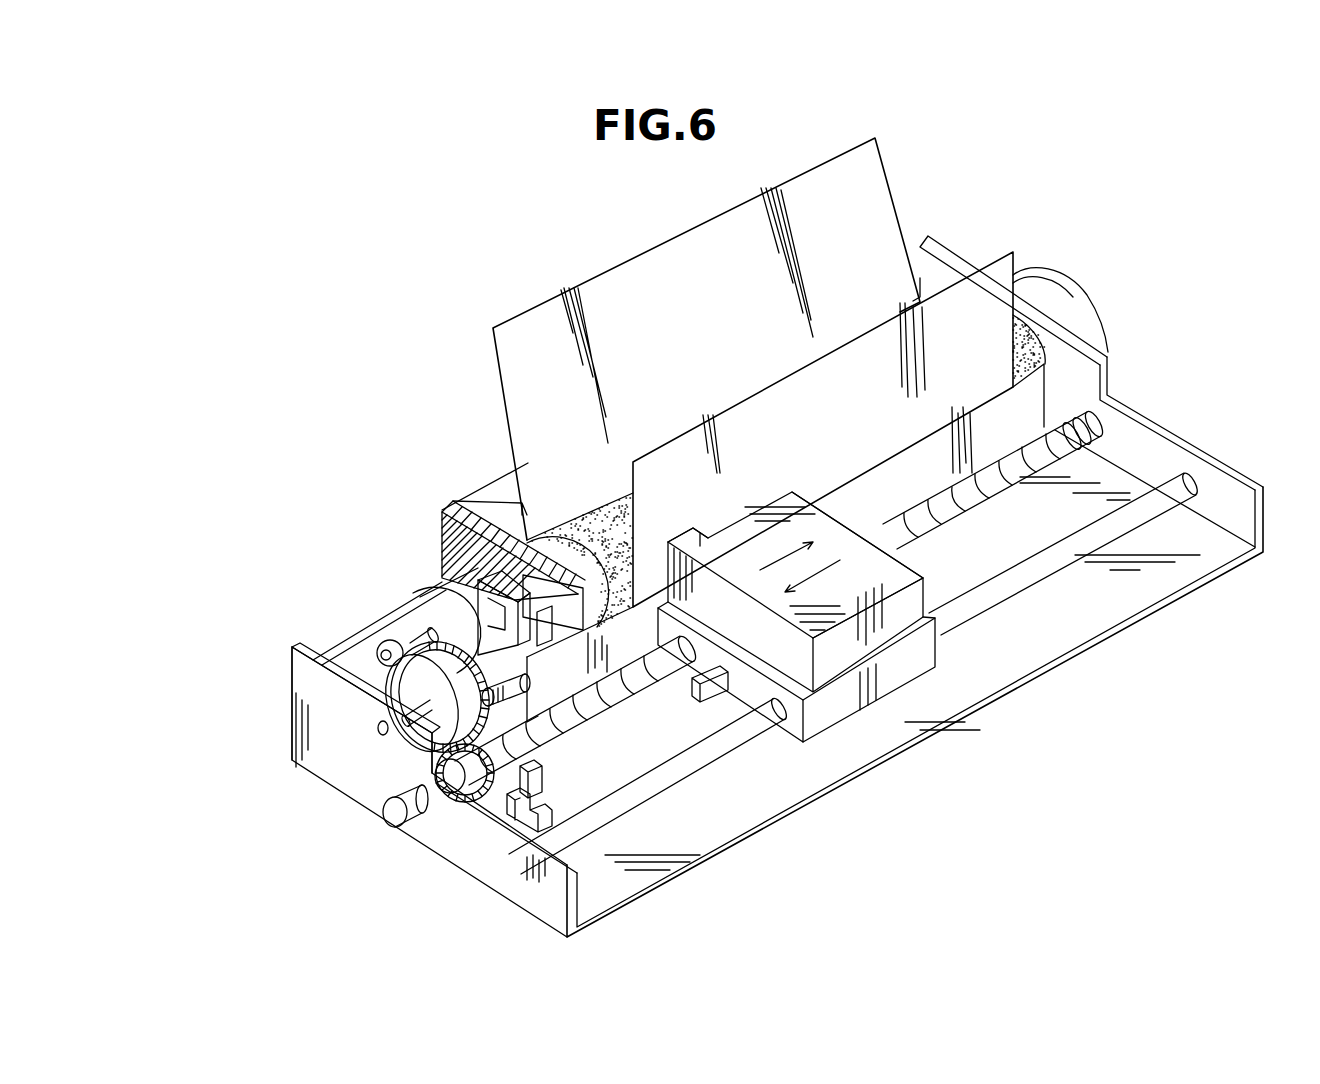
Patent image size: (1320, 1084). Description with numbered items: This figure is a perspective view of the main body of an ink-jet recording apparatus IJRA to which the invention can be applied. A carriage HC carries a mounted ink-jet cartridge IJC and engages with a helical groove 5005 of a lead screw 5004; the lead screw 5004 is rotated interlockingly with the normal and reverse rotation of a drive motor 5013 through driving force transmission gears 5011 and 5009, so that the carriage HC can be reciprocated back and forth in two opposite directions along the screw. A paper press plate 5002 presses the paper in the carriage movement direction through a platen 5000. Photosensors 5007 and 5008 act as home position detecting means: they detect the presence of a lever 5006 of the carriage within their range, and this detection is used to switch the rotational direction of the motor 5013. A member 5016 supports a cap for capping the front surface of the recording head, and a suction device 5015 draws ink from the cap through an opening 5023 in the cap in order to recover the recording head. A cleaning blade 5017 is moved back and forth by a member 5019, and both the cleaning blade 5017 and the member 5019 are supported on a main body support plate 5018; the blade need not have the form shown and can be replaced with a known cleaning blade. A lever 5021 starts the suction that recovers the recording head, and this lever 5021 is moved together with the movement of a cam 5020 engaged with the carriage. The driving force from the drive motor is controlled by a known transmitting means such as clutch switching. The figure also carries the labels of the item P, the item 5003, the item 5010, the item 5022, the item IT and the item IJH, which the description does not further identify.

The recording paper P is at (885, 180).
The ink-jet recording apparatus IJRA is at (1087, 223).
The platen 5000 is at (1040, 350).
The paper press plate 5002 is at (1015, 412).
The member 5016 is at (502, 513).
The main body support plate 5018 is at (468, 505).
The member 5019 is at (443, 532).
The cleaning blade 5017 is at (540, 575).
The cap member 5022 is at (587, 642).
The helical groove 5005 is at (590, 683).
The lever 5021 is at (412, 630).
The suction device 5015 is at (443, 585).
The drive motor 5013 is at (443, 590).
The driving force transmission gear 5011 is at (397, 687).
The transmission gear 5010 is at (447, 703).
The driving force transmission gear 5009 is at (462, 792).
The cam 5020 is at (540, 797).
The photosensor 5008 is at (495, 705).
The photosensor 5007 is at (553, 735).
The lead screw 5004 is at (662, 678).
The guide rod 5003 is at (770, 724).
The lever 5006 is at (712, 692).
The carriage HC is at (922, 660).
The ink-jet cartridge IJC is at (834, 573).
The ink tank IT is at (835, 537).
The ink jet head IJH is at (698, 537).
The opening 5023 is at (395, 687).